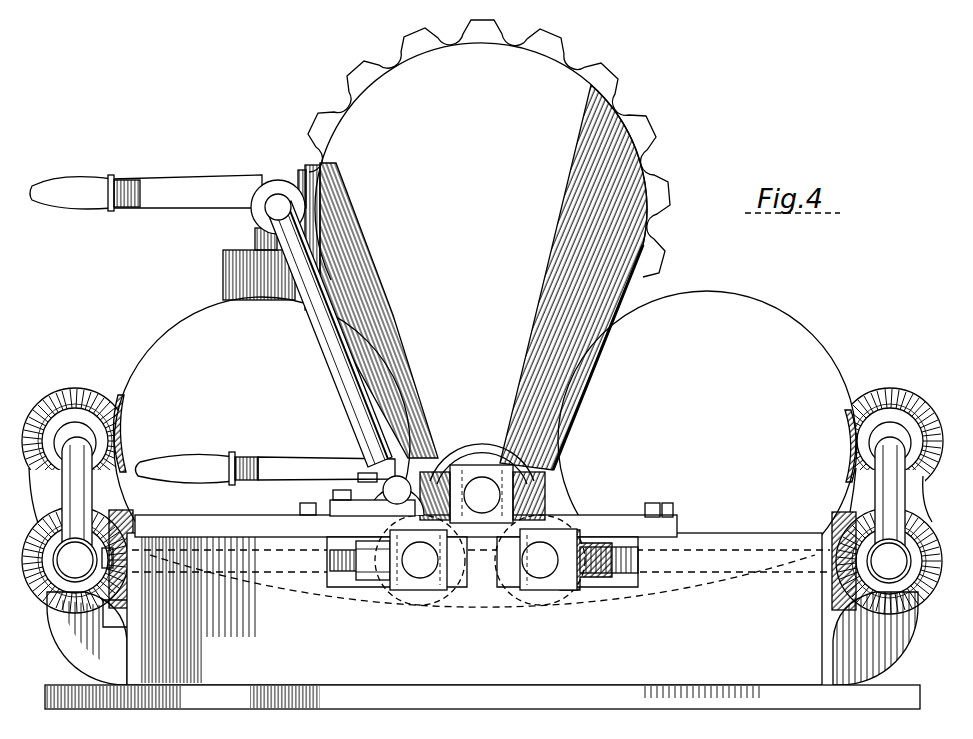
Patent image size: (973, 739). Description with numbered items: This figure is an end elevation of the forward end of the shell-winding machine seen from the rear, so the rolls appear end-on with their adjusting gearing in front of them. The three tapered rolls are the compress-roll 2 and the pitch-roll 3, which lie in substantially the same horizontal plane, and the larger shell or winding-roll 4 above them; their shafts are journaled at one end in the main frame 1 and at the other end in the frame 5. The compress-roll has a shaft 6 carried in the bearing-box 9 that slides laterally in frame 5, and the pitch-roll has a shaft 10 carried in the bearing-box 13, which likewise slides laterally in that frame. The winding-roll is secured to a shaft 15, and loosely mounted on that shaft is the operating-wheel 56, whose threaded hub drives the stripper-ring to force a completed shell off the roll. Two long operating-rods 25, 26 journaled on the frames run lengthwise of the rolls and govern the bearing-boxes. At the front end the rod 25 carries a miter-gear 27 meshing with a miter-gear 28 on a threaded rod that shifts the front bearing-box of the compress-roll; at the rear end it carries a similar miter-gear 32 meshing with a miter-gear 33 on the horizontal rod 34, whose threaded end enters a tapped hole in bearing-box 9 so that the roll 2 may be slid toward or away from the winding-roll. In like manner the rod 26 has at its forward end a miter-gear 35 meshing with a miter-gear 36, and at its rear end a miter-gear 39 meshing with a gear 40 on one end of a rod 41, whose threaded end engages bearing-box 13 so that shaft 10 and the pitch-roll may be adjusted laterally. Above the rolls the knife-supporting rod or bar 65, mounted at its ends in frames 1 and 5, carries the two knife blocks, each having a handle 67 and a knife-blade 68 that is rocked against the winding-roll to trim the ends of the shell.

The main frame 1 is at (228, 262).
The compress-roll 2 is at (707, 440).
The pitch-roll 3 is at (262, 445).
The shell or winding-roll 4 is at (487, 238).
The frame 5 is at (482, 606).
The shaft 6 is at (540, 560).
The bearing-box 9 is at (587, 588).
The shaft 10 is at (420, 560).
The bearing-box 13 is at (382, 582).
The shaft 15 is at (482, 483).
The operating-rod 25 is at (906, 488).
The operating-rod 26 is at (62, 478).
The miter-gear 27 is at (902, 408).
The miter-gear 28 is at (853, 412).
The miter-gear 32 is at (912, 606).
The miter-gear 33 is at (838, 606).
The horizontal rod 34 is at (626, 578).
The miter-gear 35 is at (47, 410).
The miter-gear 36 is at (118, 398).
The miter-gear 39 is at (44, 585).
The miter-gear 40 is at (115, 600).
The rod 41 is at (343, 572).
The operating-wheel 56 is at (418, 46).
The knife-supporting rod or bar 65 is at (333, 356).
The handle 67 is at (150, 188).
The knife-blade 68 is at (302, 180).